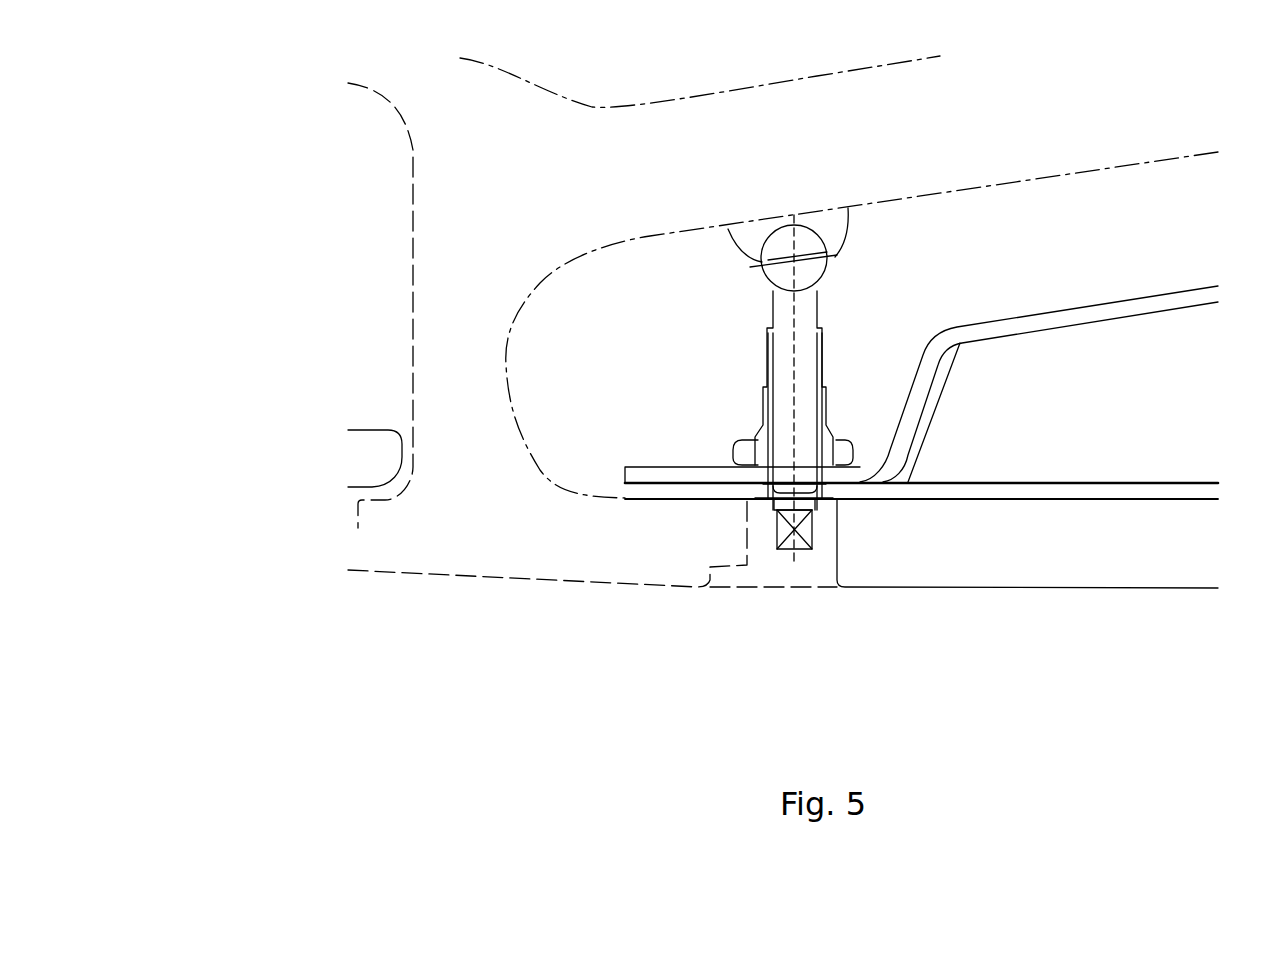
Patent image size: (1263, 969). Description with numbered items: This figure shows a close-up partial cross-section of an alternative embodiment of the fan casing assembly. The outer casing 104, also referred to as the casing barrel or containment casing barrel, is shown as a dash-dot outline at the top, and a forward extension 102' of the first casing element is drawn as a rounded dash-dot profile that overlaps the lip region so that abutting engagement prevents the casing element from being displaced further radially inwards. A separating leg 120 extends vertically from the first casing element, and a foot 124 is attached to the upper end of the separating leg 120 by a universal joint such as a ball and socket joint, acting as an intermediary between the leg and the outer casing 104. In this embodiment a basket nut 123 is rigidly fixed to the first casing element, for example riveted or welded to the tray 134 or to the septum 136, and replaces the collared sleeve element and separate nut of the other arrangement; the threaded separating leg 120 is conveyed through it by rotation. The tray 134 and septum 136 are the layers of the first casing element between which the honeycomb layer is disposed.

The outer casing 104 is at (637, 138).
The forward extension 102' is at (724, 325).
The foot 124 is at (848, 237).
The separating leg 120 is at (767, 309).
The basket nut 123 is at (858, 458).
The tray 134 is at (645, 480).
The septum 136 is at (660, 493).